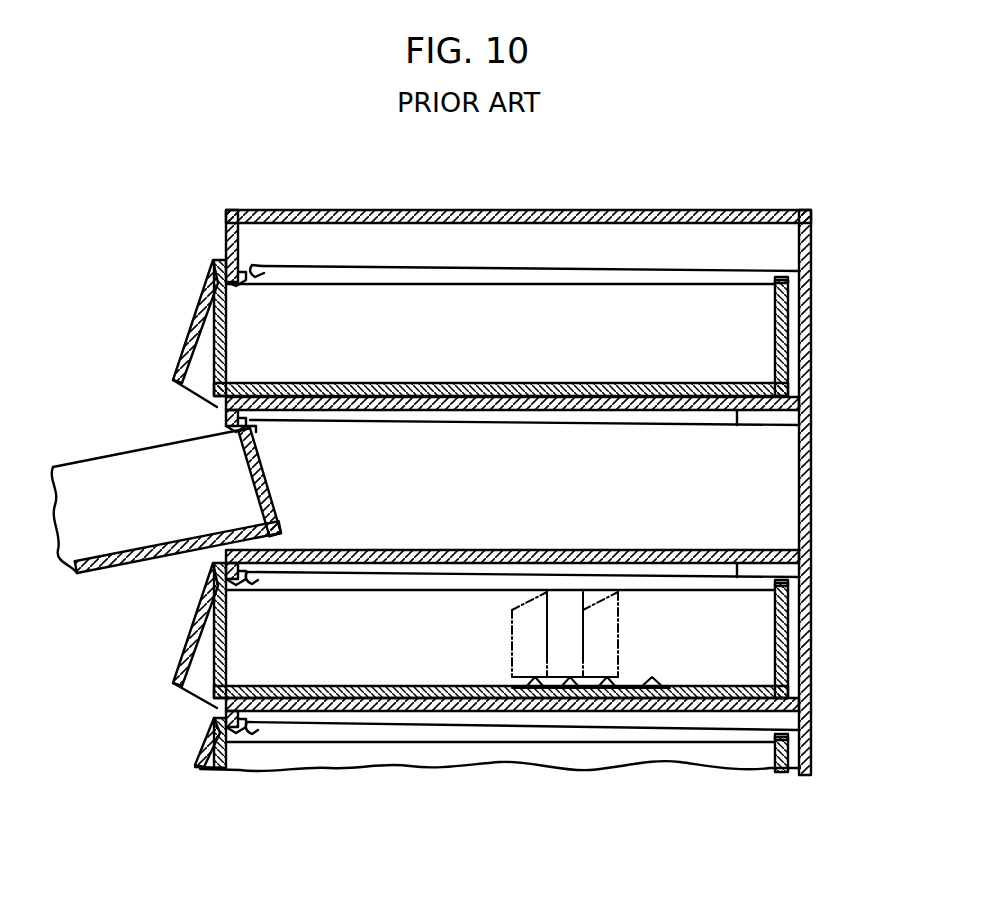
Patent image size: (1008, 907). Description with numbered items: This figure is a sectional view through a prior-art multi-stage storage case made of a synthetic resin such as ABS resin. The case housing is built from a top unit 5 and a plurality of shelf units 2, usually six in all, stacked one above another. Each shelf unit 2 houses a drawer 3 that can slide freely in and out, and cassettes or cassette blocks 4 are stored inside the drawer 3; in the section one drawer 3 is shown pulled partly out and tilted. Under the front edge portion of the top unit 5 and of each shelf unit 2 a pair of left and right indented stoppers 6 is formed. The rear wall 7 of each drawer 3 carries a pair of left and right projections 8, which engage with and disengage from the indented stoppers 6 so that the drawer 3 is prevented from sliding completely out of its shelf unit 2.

The shelf unit 2 is at (738, 410).
The drawer 3 is at (193, 330).
The cassette 4 is at (512, 617).
The top unit 5 is at (770, 210).
The indented stopper 6 is at (262, 268).
The rear wall 7 is at (780, 327).
The projection 8 is at (800, 278).